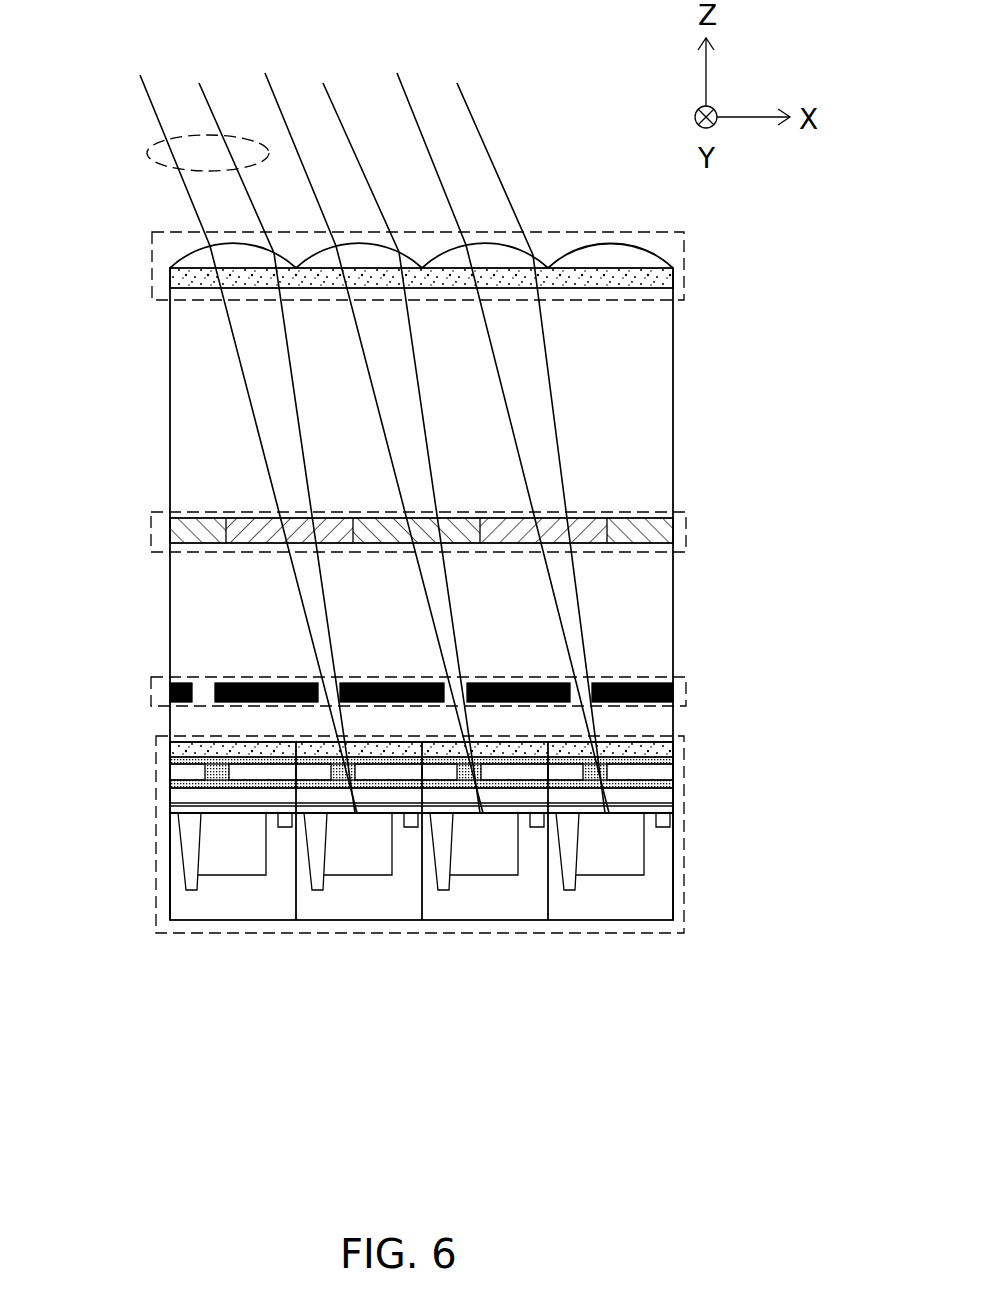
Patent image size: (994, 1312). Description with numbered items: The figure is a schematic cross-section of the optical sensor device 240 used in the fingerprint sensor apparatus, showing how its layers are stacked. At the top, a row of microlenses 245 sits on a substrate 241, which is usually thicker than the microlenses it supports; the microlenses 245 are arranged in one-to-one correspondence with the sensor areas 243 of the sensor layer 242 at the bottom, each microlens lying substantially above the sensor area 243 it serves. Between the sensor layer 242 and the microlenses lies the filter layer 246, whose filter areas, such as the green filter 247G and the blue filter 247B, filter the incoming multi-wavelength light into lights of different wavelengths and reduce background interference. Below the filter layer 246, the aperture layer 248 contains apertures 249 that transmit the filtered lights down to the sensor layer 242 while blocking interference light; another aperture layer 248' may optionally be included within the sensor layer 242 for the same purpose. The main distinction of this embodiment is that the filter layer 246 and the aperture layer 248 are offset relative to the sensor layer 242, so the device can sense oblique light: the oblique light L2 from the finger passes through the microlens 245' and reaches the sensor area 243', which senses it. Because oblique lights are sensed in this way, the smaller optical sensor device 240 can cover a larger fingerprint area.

The optical sensor device 240 is at (757, 1016).
The oblique light L2 is at (193, 133).
The microlenses 245 is at (421, 215).
The microlens 245' is at (369, 265).
The substrate 241 is at (678, 278).
The filter layer 246 is at (151, 522).
The green filter 247G is at (232, 518).
The blue filter 247B is at (640, 518).
The aperture layer 248 is at (355, 685).
The aperture 249 is at (625, 683).
The another aperture layer 248' is at (469, 784).
The sensor layer 242 is at (410, 873).
The sensor area 243 is at (613, 911).
The sensor area 243' is at (361, 911).